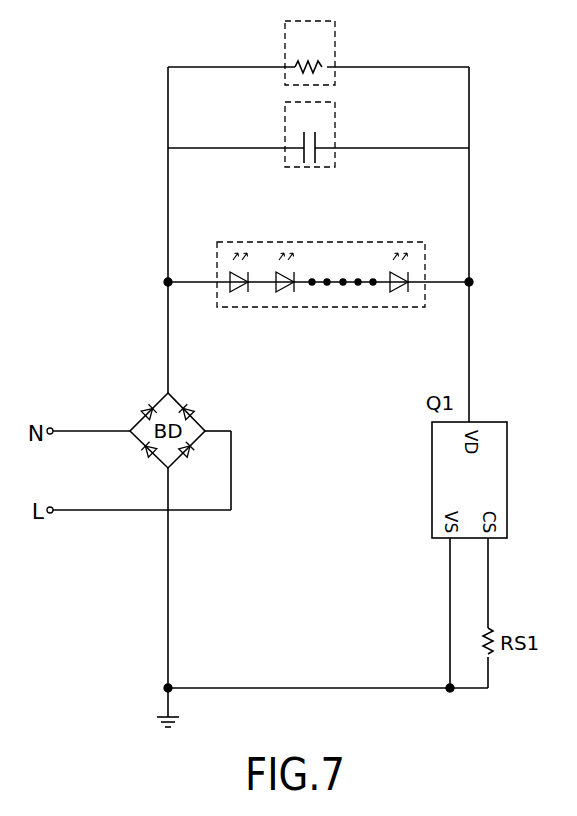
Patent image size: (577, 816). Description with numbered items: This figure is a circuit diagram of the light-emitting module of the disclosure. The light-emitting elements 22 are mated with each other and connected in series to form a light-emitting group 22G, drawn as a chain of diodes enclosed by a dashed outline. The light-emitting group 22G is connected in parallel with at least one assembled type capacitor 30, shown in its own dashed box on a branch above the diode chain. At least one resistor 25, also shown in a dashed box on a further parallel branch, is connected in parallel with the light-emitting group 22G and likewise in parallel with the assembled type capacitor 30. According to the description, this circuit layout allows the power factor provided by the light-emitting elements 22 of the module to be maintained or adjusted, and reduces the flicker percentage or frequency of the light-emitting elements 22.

The resistor 25 is at (336, 38).
The assembled type capacitor 30 is at (336, 118).
The light-emitting group 22G is at (379, 299).
The light-emitting element 22 is at (241, 307).